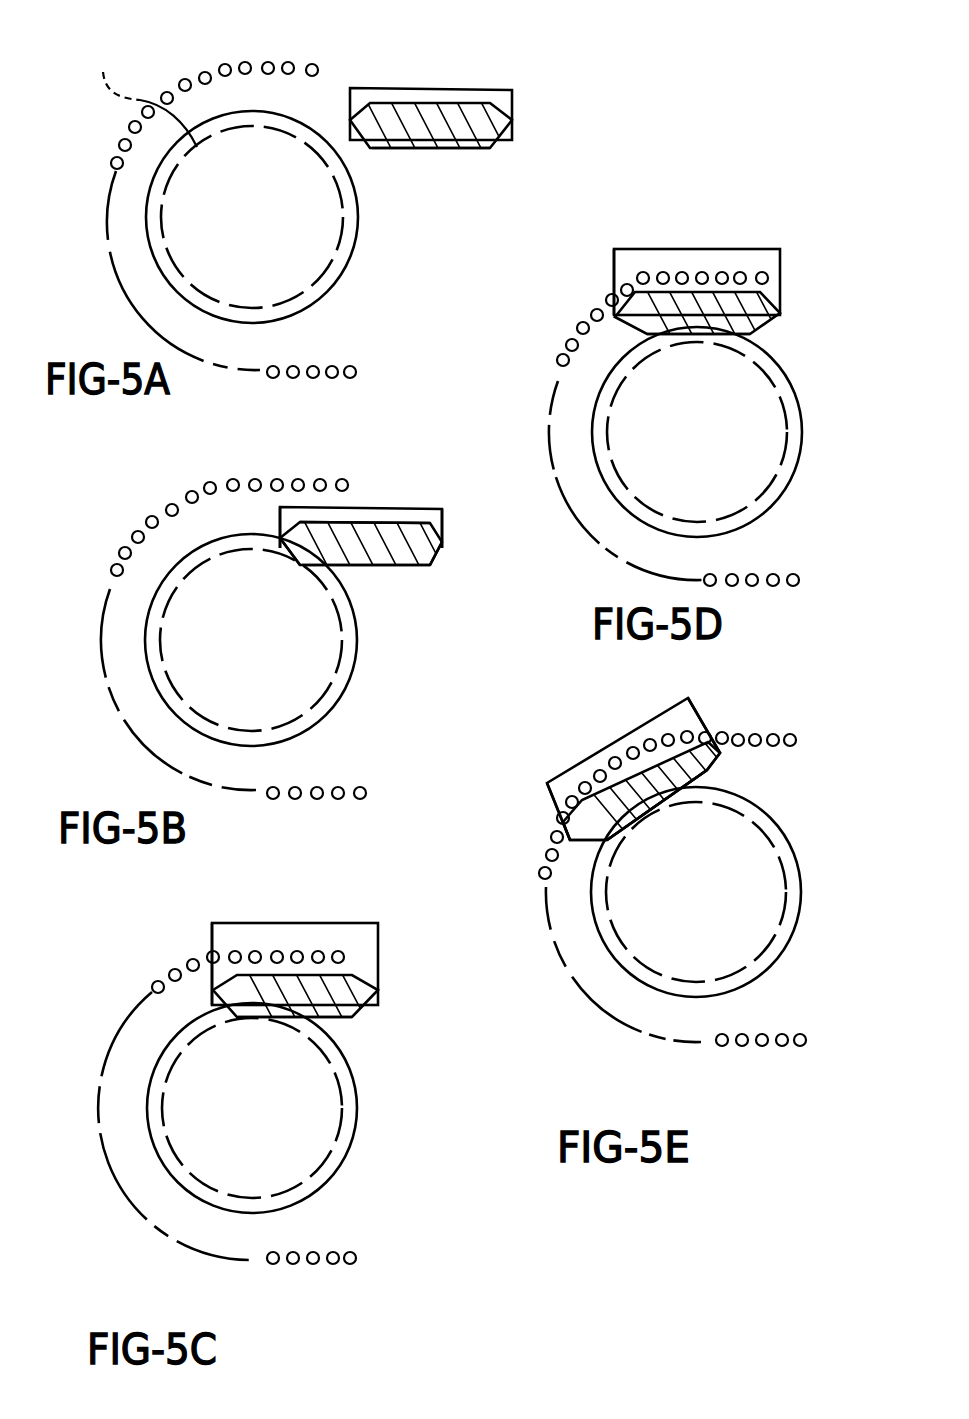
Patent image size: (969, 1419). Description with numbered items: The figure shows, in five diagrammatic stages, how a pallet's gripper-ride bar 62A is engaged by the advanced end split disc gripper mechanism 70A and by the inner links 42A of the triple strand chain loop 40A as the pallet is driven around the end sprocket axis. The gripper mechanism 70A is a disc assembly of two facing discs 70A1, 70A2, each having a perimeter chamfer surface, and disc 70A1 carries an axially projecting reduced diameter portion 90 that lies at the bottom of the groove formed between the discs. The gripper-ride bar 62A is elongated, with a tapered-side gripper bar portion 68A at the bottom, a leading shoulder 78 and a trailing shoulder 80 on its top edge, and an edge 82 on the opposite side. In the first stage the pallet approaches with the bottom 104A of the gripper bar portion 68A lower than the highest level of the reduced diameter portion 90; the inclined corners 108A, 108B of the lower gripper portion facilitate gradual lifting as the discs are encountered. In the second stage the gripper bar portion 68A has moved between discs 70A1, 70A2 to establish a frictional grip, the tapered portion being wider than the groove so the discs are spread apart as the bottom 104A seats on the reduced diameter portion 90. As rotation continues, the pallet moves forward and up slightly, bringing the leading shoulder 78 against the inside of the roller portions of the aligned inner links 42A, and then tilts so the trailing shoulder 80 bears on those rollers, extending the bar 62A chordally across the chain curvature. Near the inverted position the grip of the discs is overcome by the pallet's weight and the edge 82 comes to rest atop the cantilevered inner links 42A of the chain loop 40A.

In FIG. 5A, the triple strand chain loop 40A is at (113, 147).
In FIG. 5A, the inner links 42A is at (185, 79).
In FIG. 5B, the inner links 42A is at (139, 530).
In FIG. 5C, the inner links 42A is at (168, 977).
In FIG. 5D, the inner links 42A is at (595, 309).
In FIG. 5E, the inner links 42A is at (545, 852).
In FIG. 5A, the gripper-ride bar 62A is at (467, 138).
In FIG. 5B, the gripper-ride bar 62A is at (341, 571).
In FIG. 5D, the gripper-ride bar 62A is at (726, 306).
In FIG. 5E, the gripper-ride bar 62A is at (663, 783).
In FIG. 5A, the gripper bar portion 68A is at (487, 144).
In FIG. 5B, the gripper bar portion 68A is at (438, 552).
In FIG. 5C, the gripper bar portion 68A is at (355, 1011).
In FIG. 5A, the split disc gripper mechanism 70A is at (211, 225).
In FIG. 5B, the split disc gripper mechanism 70A is at (288, 655).
In FIG. 5C, the split disc gripper mechanism 70A is at (252, 1108).
In FIG. 5D, the split disc gripper mechanism 70A is at (641, 439).
In FIG. 5E, the split disc gripper mechanism 70A is at (663, 996).
In FIG. 5A, the disc 70A1 is at (183, 225).
In FIG. 5B, the disc 70A1 is at (288, 655).
In FIG. 5D, the disc 70A1 is at (633, 432).
In FIG. 5A, the disc 70A2 is at (155, 270).
In FIG. 5B, the disc 70A2 is at (362, 737).
In FIG. 5D, the disc 70A2 is at (588, 398).
In FIG. 5B, the leading shoulder 78 is at (248, 530).
In FIG. 5C, the leading shoulder 78 is at (223, 980).
In FIG. 5D, the leading shoulder 78 is at (616, 250).
In FIG. 5E, the leading shoulder 78 is at (558, 781).
In FIG. 5B, the trailing shoulder 80 is at (433, 511).
In FIG. 5E, the trailing shoulder 80 is at (700, 735).
In FIG. 5B, the edge 82 is at (350, 520).
In FIG. 5A, the reduced diameter portion 90 is at (145, 94).
In FIG. 5A, the bottom 104A is at (420, 148).
In FIG. 5B, the bottom 104A is at (372, 570).
In FIG. 5C, the bottom 104A is at (313, 1016).
In FIG. 5D, the bottom 104A is at (690, 337).
In FIG. 5E, the bottom 104A is at (660, 808).
In FIG. 5B, the inclined corner 108A is at (297, 563).
In FIG. 5B, the inclined corner 108B is at (424, 563).